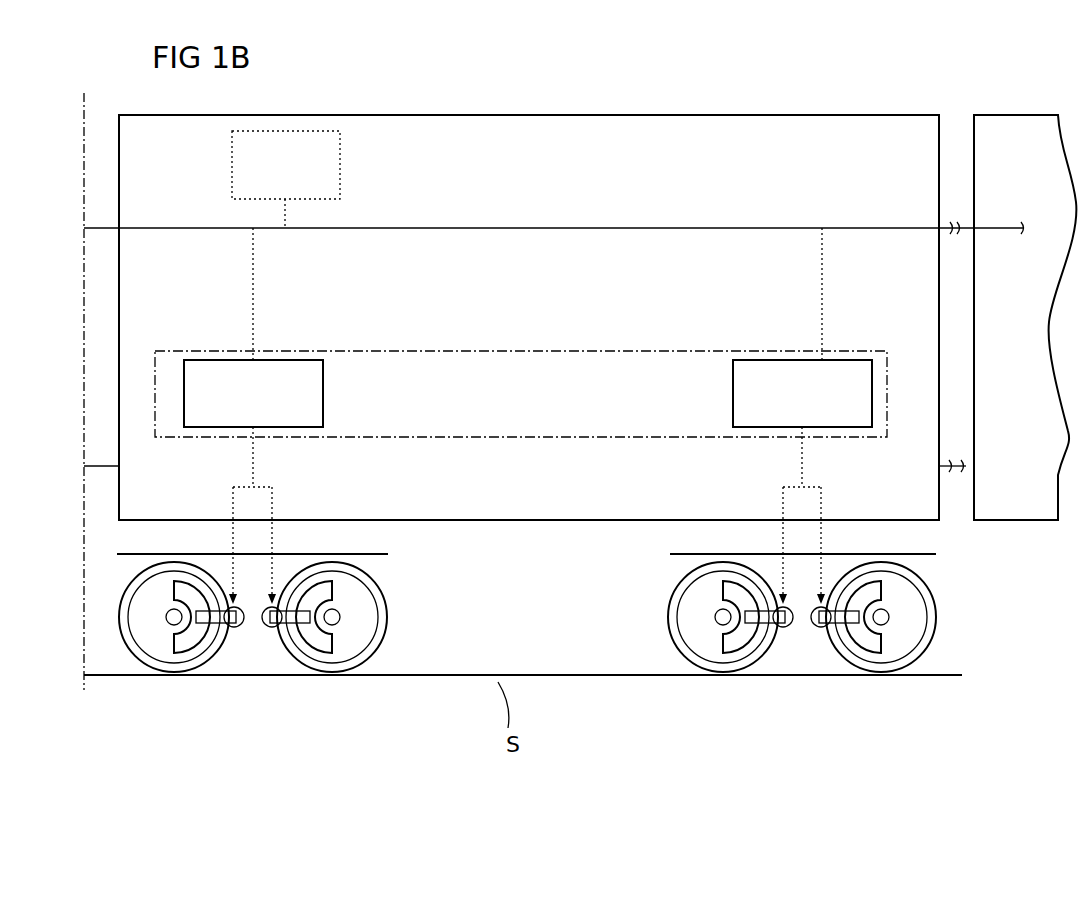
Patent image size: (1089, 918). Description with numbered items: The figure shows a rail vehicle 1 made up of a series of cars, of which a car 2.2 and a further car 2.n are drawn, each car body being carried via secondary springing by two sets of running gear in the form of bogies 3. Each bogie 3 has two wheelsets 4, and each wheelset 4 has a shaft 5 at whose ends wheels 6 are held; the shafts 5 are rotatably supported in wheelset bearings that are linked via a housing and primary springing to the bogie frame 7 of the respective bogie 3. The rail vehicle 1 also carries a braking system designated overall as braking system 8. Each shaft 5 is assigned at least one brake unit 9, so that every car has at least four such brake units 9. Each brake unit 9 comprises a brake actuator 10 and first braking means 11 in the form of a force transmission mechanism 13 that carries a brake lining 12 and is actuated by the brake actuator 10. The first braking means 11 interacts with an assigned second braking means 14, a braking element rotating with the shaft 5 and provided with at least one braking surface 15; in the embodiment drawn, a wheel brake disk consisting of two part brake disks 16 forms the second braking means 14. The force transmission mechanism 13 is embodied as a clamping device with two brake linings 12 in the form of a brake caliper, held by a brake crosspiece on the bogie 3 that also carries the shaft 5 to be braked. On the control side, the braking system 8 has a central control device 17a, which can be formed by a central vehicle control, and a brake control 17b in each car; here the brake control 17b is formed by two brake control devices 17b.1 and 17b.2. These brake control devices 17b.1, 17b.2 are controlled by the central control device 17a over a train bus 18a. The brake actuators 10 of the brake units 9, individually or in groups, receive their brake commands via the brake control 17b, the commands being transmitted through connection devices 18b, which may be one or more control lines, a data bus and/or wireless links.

The rail vehicle 1 is at (789, 93).
The car 2.2 is at (570, 115).
The car 2.n is at (1000, 115).
The bogie 3 is at (252, 645).
The wheelset 4 is at (128, 648).
The shaft 5 is at (150, 640).
The wheel 6 is at (680, 632).
The bogie frame 7 is at (250, 560).
The braking system 8 is at (511, 338).
The brake unit 9 is at (205, 585).
The brake actuator 10 is at (237, 632).
The first braking means 11 is at (184, 563).
The brake lining 12 is at (715, 565).
The force transmission mechanism 13 is at (718, 640).
The second braking means 14 is at (146, 637).
The braking surface 15 is at (690, 622).
The part brake disk 16 is at (683, 600).
The central control device 17a is at (340, 158).
The brake control 17b is at (403, 351).
The brake control device 17b.1 is at (290, 359).
The brake control device 17b.2 is at (760, 359).
The train bus 18a is at (600, 228).
The connection devices 18b is at (253, 460).